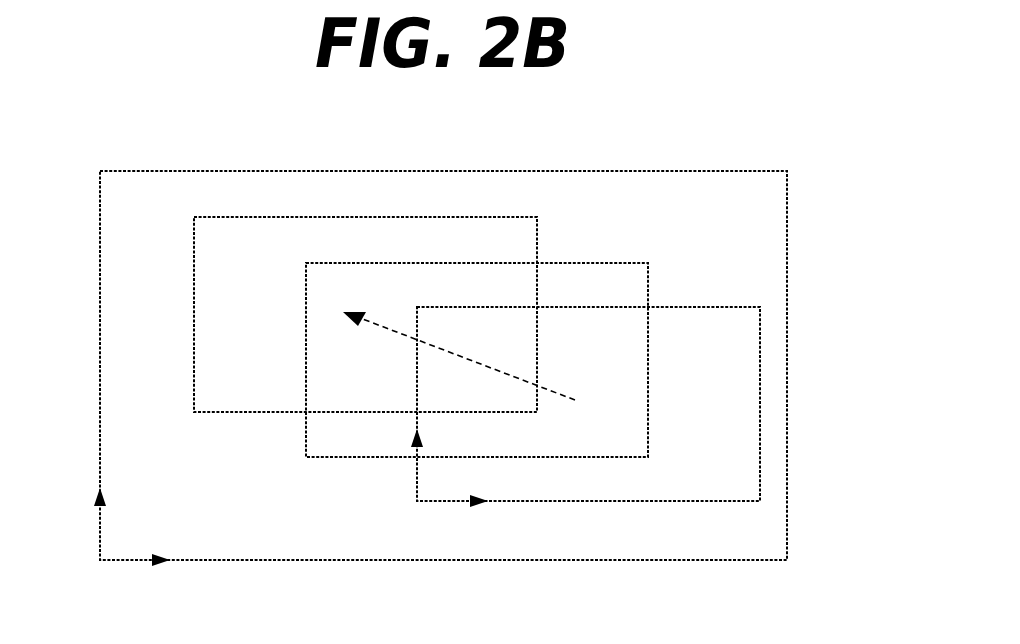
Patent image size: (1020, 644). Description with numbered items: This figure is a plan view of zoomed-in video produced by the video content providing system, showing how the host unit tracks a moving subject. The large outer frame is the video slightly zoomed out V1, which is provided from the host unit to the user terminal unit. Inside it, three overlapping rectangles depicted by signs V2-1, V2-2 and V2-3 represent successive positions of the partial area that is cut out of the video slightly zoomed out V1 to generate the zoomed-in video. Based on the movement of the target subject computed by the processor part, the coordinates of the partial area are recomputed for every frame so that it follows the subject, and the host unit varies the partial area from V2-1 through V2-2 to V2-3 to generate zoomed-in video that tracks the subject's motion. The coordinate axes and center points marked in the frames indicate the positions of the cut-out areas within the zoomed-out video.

The video slightly zoomed out V1 is at (788, 281).
The zoomed-in video partial area V2-1 is at (761, 400).
The zoomed-in video partial area V2-2 is at (577, 262).
The zoomed-in video partial area V2-3 is at (318, 217).